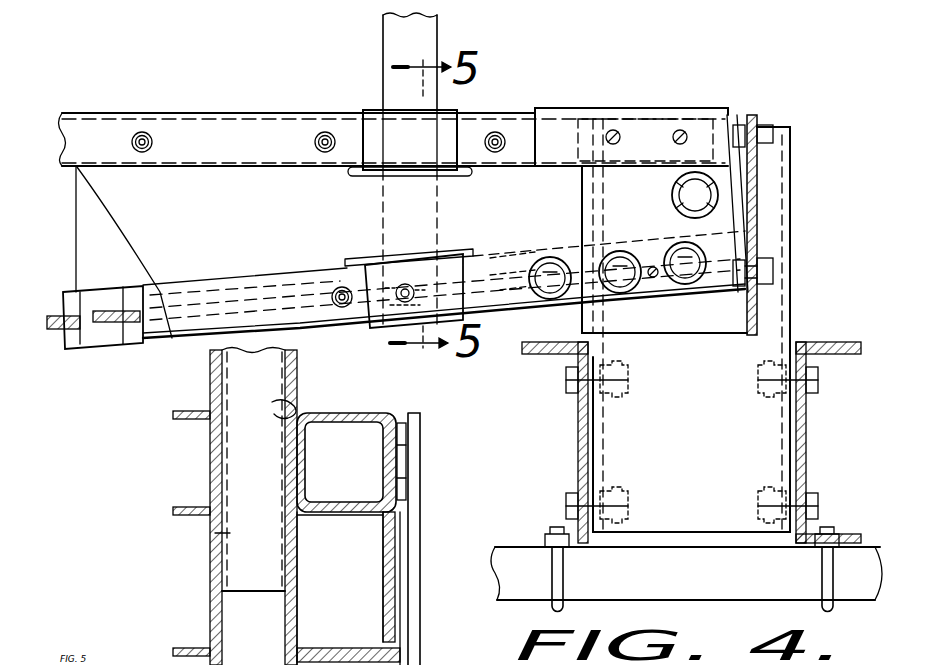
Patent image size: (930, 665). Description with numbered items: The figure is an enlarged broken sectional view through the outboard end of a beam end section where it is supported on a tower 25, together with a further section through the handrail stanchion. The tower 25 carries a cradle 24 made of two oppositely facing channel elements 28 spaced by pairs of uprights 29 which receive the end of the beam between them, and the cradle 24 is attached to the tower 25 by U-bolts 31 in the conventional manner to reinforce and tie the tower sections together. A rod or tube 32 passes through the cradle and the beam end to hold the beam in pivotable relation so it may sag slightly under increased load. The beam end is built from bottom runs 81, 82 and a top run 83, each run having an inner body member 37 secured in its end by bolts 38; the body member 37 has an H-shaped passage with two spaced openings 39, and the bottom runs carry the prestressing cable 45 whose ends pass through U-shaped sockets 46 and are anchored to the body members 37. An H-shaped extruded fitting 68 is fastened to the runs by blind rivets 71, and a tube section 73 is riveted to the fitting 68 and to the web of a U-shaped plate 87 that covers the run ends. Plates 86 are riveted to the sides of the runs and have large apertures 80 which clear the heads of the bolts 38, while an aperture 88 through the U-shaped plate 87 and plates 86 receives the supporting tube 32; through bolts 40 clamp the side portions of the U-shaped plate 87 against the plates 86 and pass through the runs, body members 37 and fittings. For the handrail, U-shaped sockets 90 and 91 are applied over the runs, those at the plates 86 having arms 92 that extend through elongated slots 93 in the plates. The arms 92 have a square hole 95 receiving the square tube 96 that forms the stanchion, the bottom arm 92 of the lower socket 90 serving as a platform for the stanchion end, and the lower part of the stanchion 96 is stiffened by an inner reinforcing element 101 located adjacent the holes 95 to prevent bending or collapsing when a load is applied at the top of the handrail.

In FIG. 4, the cradle 24 is at (808, 453).
In FIG. 4, the tower 25 is at (849, 599).
In FIG. 4, the channel element 28 is at (580, 430).
In FIG. 4, the upright 29 is at (757, 258).
In FIG. 4, the U-bolt 31 is at (565, 580).
In FIG. 4, the rod or tube 32 is at (767, 123).
In FIG. 4, the inner body member 37 is at (528, 235).
In FIG. 5, the inner body member 37 is at (422, 664).
In FIG. 4, the bolt 38 is at (552, 299).
In FIG. 5, the bolt 38 is at (406, 472).
In FIG. 5, the opening 39 is at (343, 650).
In FIG. 4, the through bolt 40 is at (679, 129).
In FIG. 4, the cable 45 is at (62, 342).
In FIG. 5, the U-shaped socket 46 is at (306, 645).
In FIG. 4, the extruded fitting 68 is at (560, 107).
In FIG. 4, the blind rivet 71 is at (152, 142).
In FIG. 4, the tube section 73 is at (738, 110).
In FIG. 4, the aperture 80 is at (555, 258).
In FIG. 4, the lower run 81 is at (128, 347).
In FIG. 5, the lower run 81 is at (400, 660).
In FIG. 4, the lower run 82 is at (95, 300).
In FIG. 4, the top run 83 is at (65, 127).
In FIG. 4, the plate 86 is at (231, 182).
In FIG. 5, the plate 86 is at (392, 548).
In FIG. 4, the U-shaped plate 87 is at (757, 168).
In FIG. 4, the aperture 88 is at (715, 200).
In FIG. 4, the U-shaped socket 90 is at (440, 256).
In FIG. 4, the U-shaped socket 91 is at (400, 130).
In FIG. 5, the U-shaped socket 91 is at (396, 447).
In FIG. 5, the arm 92 is at (332, 517).
In FIG. 4, the elongated slot 93 is at (470, 176).
In FIG. 5, the elongated slot 93 is at (396, 517).
In FIG. 5, the square hole 95 is at (292, 402).
In FIG. 4, the square tube 96 is at (381, 27).
In FIG. 5, the square tube 96 is at (212, 373).
In FIG. 5, the inner reinforcing element 101 is at (245, 535).